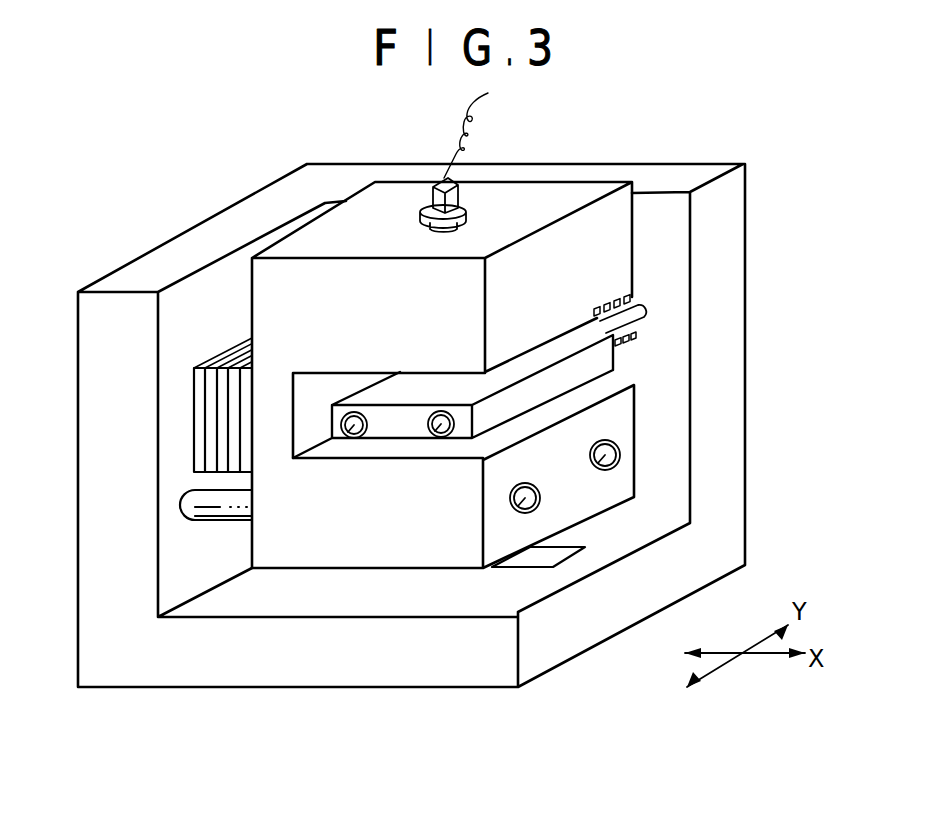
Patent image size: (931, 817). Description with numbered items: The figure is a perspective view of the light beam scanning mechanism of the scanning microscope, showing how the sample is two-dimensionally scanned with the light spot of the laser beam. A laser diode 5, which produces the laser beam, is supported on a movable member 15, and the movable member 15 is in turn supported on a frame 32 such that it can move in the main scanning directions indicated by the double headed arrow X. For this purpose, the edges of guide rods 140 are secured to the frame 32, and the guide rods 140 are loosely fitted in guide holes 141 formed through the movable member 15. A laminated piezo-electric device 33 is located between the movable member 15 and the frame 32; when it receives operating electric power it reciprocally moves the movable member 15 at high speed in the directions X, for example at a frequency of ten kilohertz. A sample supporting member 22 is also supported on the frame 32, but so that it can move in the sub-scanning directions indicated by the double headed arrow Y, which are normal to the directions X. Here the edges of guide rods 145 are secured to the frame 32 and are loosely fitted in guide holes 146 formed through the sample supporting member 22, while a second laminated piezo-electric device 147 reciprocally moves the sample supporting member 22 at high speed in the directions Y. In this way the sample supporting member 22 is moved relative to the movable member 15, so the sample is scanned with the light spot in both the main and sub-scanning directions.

The laser diode 5 is at (463, 214).
The movable member 15 is at (618, 228).
The sample supporting member 22 is at (595, 366).
The frame 32 is at (168, 262).
The laminated piezo-electric device 33 is at (198, 394).
The guide rod 140 is at (214, 506).
The guide hole 141 is at (527, 503).
The guide rod 145 is at (634, 334).
The guide hole 146 is at (346, 414).
The laminated piezo-electric device 147 is at (640, 302).